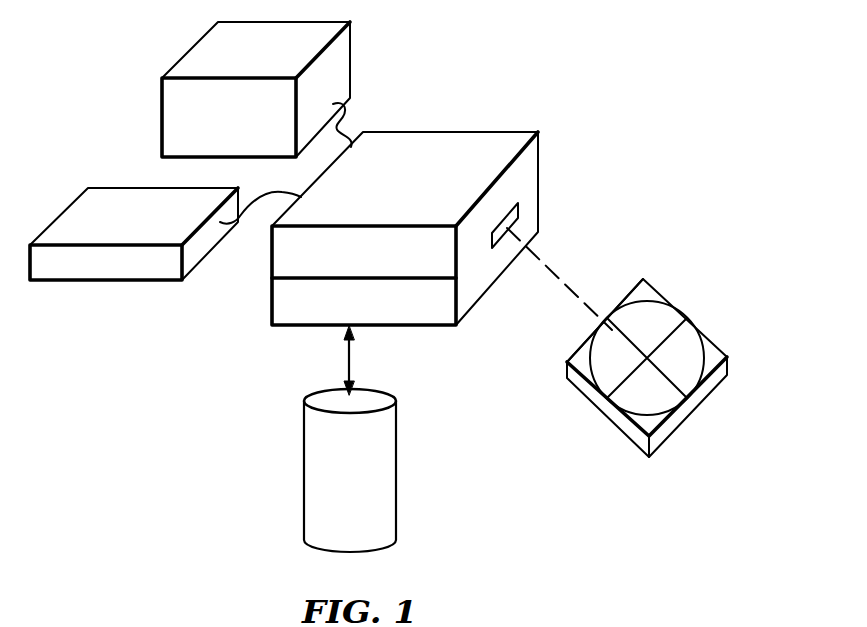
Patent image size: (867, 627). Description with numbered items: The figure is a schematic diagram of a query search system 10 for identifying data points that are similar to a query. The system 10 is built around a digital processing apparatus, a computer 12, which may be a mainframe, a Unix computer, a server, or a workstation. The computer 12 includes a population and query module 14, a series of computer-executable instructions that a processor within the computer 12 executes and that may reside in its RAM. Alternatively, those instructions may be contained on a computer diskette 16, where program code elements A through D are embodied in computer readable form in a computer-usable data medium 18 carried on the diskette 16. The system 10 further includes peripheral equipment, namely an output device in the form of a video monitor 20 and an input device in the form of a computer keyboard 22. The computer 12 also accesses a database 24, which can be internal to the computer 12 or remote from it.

The system 10 is at (196, 349).
The computer 12 is at (430, 145).
The population and query module 14 is at (453, 300).
The computer diskette 16 is at (717, 340).
The computer-usable data medium 18 is at (663, 303).
The video monitor 20 is at (342, 63).
The computer keyboard 22 is at (127, 215).
The database 24 is at (380, 438).